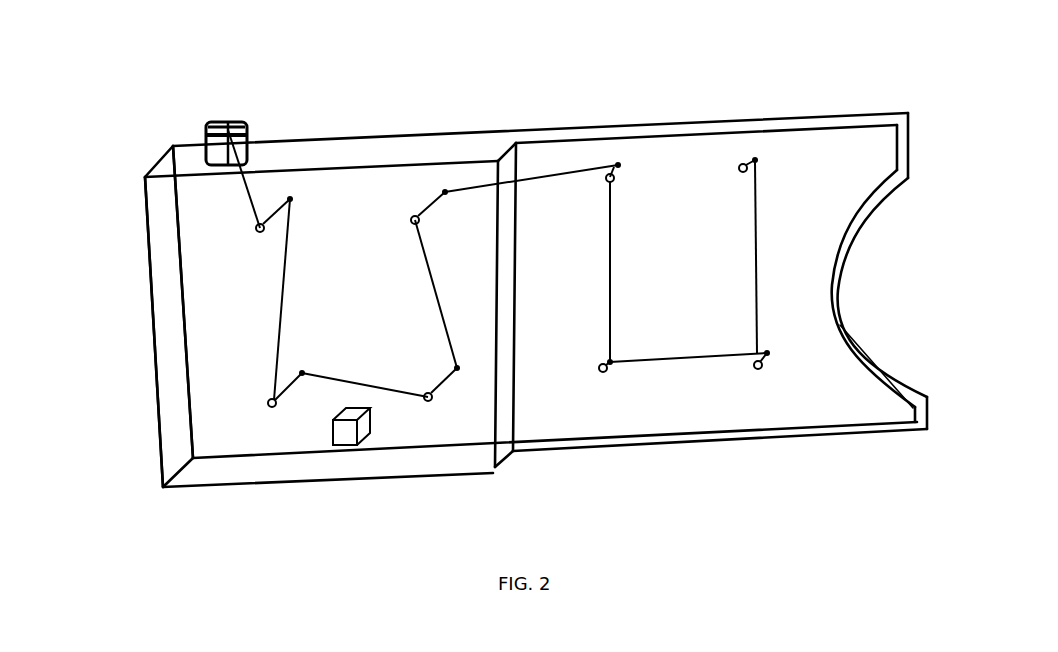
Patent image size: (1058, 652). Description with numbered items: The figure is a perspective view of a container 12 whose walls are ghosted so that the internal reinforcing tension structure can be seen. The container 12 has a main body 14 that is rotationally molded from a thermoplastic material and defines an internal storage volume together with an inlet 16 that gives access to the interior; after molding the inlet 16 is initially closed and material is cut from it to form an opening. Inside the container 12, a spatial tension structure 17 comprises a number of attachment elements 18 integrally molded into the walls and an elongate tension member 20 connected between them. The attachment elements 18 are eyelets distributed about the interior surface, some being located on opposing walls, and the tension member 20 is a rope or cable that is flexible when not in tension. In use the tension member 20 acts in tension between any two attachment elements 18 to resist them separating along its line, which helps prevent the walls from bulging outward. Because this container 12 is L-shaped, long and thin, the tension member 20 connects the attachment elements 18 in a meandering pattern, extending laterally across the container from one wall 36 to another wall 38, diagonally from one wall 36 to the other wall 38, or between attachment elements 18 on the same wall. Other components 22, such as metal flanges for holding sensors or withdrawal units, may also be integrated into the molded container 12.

The container 12 is at (390, 118).
The main body 14 is at (848, 120).
The inlet 16 is at (220, 113).
The spatial tension structure 17 is at (545, 174).
The attachment elements 18 is at (740, 158).
The tension member 20 is at (685, 372).
The other components 22 is at (345, 449).
The wall 36 is at (170, 397).
The wall 38 is at (201, 267).